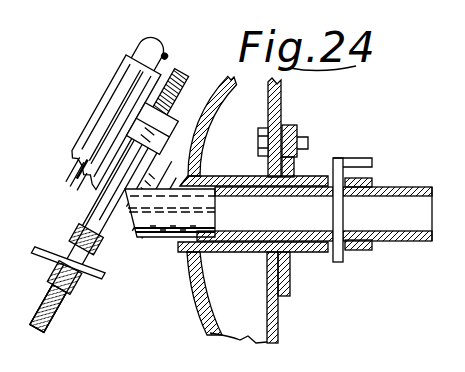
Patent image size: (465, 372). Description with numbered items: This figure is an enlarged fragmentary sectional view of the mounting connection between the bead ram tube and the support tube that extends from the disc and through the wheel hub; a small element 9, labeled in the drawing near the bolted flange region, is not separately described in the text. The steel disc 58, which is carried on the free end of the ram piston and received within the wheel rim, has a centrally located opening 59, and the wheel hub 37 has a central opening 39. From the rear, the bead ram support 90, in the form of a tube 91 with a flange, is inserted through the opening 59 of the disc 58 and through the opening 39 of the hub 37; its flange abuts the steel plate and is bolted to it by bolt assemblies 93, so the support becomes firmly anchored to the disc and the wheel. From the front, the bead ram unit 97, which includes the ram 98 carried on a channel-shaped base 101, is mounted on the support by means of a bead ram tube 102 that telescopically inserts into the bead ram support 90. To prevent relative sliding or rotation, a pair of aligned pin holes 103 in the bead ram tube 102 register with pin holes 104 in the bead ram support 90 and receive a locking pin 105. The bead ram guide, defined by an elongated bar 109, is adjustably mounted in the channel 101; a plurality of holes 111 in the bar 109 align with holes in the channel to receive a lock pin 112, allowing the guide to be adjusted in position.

The angle bracket 9 is at (290, 164).
The hub 37 is at (201, 318).
The central opening 39 is at (190, 176).
The disc 58 is at (279, 334).
The centrally located opening 59 is at (262, 176).
The bead ram support 90 is at (286, 124).
The tube 91 is at (230, 175).
The bolt assemblies 93 is at (300, 136).
The bead ram unit 97 is at (111, 86).
The ram 98 is at (91, 137).
The channel-shaped base 101 is at (106, 199).
The bead ram tube 102 is at (148, 229).
The pin holes 103 is at (345, 218).
The pin holes 104 is at (332, 255).
The locking pin 105 is at (334, 218).
The elongated bar 109 is at (56, 290).
The holes 111 is at (57, 321).
The lock pin 112 is at (49, 242).